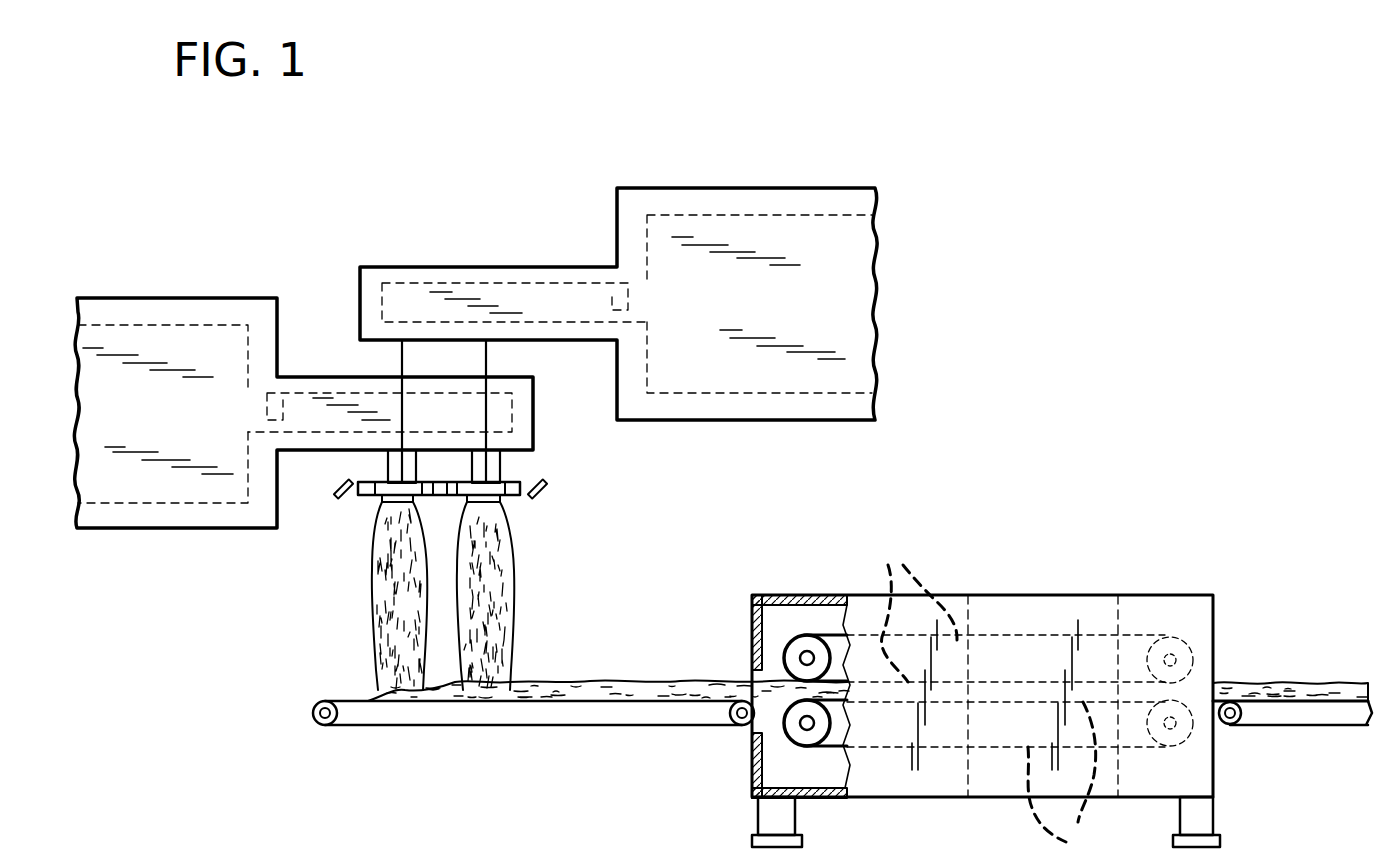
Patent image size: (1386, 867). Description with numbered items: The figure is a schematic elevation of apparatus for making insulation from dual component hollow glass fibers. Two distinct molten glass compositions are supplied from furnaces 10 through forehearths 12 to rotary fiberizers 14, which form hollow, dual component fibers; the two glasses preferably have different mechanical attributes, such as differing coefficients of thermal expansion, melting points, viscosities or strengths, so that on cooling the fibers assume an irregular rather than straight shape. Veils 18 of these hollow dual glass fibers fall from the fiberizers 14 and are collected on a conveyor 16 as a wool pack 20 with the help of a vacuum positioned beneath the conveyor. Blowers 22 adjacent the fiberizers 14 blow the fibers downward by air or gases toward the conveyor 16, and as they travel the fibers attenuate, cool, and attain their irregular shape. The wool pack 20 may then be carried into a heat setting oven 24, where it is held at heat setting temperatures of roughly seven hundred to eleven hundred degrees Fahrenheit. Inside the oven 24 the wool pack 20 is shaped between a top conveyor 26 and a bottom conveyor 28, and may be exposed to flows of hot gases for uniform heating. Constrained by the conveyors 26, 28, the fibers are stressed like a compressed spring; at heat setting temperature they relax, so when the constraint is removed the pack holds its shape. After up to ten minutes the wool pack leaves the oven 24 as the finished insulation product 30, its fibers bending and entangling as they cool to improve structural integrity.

The furnace 10 is at (157, 297).
The forehearth 12 is at (322, 377).
The rotary fiberizer 14 is at (382, 500).
The conveyor 16 is at (345, 702).
The veil 18 is at (380, 608).
The wool pack 20 is at (618, 686).
The blower 22 is at (334, 495).
The oven 24 is at (1038, 596).
The top conveyor 26 is at (977, 657).
The bottom conveyor 28 is at (1064, 777).
The insulation product 30 is at (1280, 690).